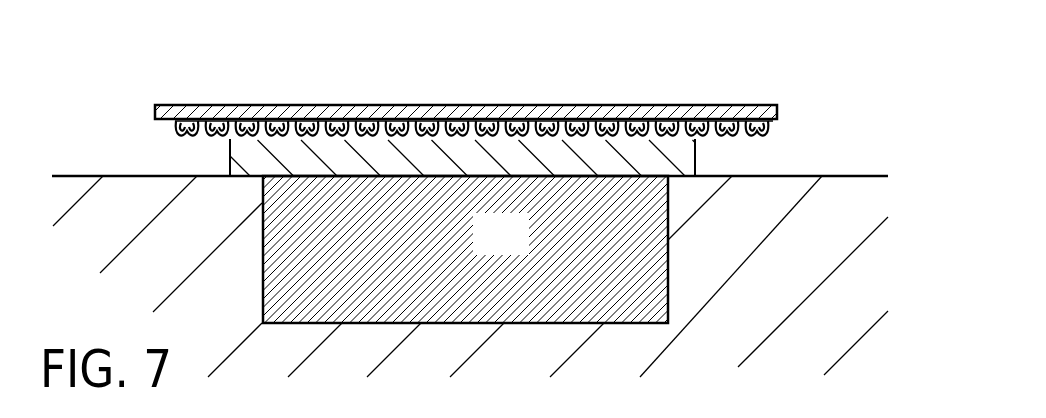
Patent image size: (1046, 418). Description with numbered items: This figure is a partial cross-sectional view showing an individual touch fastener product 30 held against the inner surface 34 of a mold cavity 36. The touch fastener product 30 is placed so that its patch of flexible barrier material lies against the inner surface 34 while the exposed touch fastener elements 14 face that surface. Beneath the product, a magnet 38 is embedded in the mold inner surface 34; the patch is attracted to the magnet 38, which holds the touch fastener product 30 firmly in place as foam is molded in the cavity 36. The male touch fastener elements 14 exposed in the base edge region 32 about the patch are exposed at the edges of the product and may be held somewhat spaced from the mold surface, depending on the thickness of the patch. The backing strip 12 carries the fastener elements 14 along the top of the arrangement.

The touch fastener product 30 is at (548, 86).
The backing plate 12 is at (643, 105).
The touch fastener elements 14 is at (768, 135).
The base edge region 32 is at (168, 140).
The inner surface 34 is at (866, 176).
The mold cavity 36 is at (73, 124).
The magnet 38 is at (514, 246).